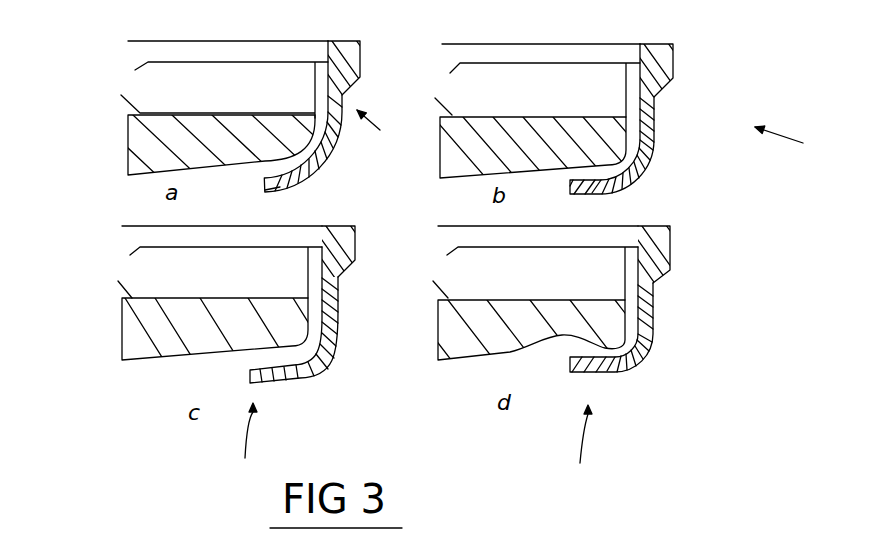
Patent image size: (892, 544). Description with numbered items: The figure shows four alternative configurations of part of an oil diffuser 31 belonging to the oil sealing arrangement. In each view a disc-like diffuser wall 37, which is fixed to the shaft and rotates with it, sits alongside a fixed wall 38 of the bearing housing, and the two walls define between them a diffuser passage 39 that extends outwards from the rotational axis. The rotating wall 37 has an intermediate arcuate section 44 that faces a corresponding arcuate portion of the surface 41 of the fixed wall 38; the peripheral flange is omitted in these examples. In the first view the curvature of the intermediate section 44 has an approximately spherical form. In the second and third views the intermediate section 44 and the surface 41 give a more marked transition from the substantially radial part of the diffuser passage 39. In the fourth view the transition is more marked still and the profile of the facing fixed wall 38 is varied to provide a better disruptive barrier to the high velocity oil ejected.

In FIG. 3a, the oil diffuser 31 is at (380, 133).
In FIG. 3b, the oil diffuser 31 is at (798, 145).
In FIG. 3c, the oil diffuser 31 is at (244, 446).
In FIG. 3d, the oil diffuser 31 is at (584, 450).
In FIG. 3a, the diffuser wall 37 is at (327, 143).
In FIG. 3b, the diffuser wall 37 is at (648, 120).
In FIG. 3c, the diffuser wall 37 is at (330, 285).
In FIG. 3d, the diffuser wall 37 is at (648, 290).
In FIG. 3a, the fixed wall 38 is at (180, 137).
In FIG. 3c, the fixed wall 38 is at (133, 330).
In FIG. 3d, the fixed wall 38 is at (442, 360).
In FIG. 3a, the diffuser passage 39 is at (297, 163).
In FIG. 3b, the diffuser passage 39 is at (633, 130).
In FIG. 3c, the diffuser passage 39 is at (313, 298).
In FIG. 3d, the diffuser passage 39 is at (630, 322).
In FIG. 3a, the surface of the fixed wall 41 is at (293, 113).
In FIG. 3c, the surface of the fixed wall 41 is at (317, 327).
In FIG. 3d, the surface of the fixed wall 41 is at (607, 343).
In FIG. 3a, the intermediate arcuate section 44 is at (298, 168).
In FIG. 3b, the intermediate arcuate section 44 is at (622, 175).
In FIG. 3c, the intermediate arcuate section 44 is at (292, 372).
In FIG. 3d, the intermediate arcuate section 44 is at (636, 366).